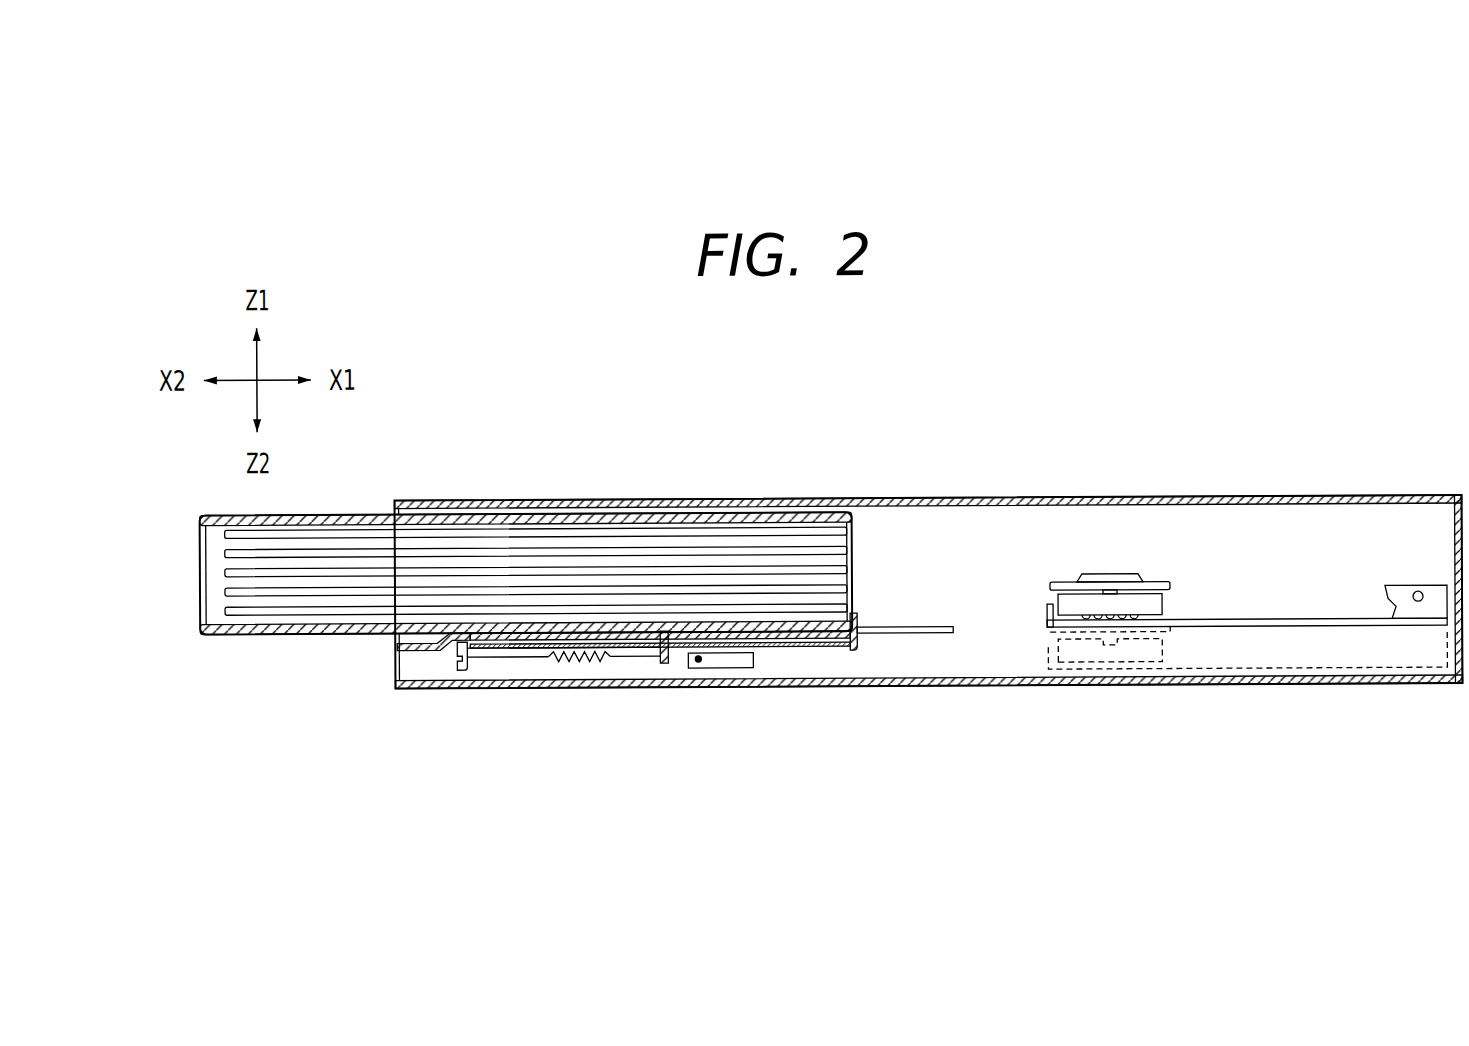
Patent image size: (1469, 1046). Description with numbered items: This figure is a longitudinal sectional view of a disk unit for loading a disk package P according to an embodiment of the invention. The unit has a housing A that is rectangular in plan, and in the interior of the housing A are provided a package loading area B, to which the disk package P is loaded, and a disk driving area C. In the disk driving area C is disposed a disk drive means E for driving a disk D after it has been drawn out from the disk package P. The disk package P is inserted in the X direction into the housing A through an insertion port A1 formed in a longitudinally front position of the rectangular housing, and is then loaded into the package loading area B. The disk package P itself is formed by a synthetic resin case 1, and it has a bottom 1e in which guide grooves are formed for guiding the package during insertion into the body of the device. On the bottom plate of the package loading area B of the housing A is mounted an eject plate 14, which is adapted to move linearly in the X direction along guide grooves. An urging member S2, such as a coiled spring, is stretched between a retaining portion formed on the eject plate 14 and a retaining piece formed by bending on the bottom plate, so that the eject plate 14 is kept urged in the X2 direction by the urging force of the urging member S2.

The synthetic resin case 1 is at (203, 545).
The bottom 1e is at (252, 628).
The eject plate 14 is at (500, 645).
The urging member S2 is at (583, 662).
The housing A is at (1307, 494).
The insertion port A1 is at (380, 651).
The package loading area B is at (882, 522).
The disk driving area C is at (1265, 547).
The disk D is at (847, 605).
The disk drive means E is at (1182, 606).
The disk package P is at (357, 491).